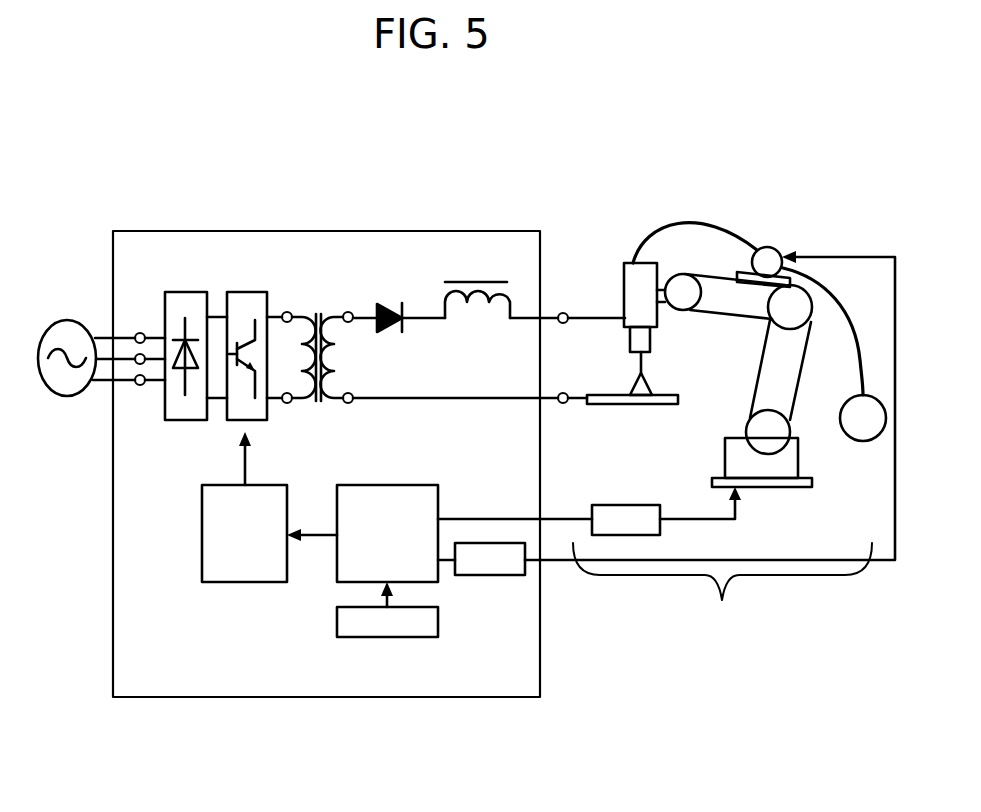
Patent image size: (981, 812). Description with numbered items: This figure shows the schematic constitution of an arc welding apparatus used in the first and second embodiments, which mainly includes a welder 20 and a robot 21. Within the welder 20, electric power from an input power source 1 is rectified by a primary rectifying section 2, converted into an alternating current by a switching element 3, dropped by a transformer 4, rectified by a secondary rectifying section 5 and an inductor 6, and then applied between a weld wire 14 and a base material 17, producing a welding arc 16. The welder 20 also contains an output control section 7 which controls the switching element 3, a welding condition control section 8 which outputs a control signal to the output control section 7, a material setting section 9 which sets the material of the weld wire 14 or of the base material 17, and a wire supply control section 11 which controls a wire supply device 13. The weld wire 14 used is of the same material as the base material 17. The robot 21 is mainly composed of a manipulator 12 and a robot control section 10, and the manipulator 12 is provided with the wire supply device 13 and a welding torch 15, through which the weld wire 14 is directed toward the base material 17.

The input power source 1 is at (71, 318).
The primary rectifying section 2 is at (186, 292).
The switching element 3 is at (243, 292).
The transformer 4 is at (318, 306).
The secondary rectifying section 5 is at (386, 292).
The inductor (DCL) 6 is at (475, 275).
The output control section 7 is at (247, 585).
The welding condition control section 8 is at (398, 485).
The material setting section 9 is at (393, 640).
The robot control section 10 is at (600, 505).
The wire supply control section 11 is at (492, 577).
The manipulator 12 is at (805, 442).
The wire supply device 13 is at (766, 246).
The weld wire 14 is at (643, 363).
The welding torch 15 is at (622, 277).
The welding arc 16 is at (640, 388).
The base material 17 is at (637, 405).
The welder 20 is at (241, 230).
The robot 21 is at (722, 592).